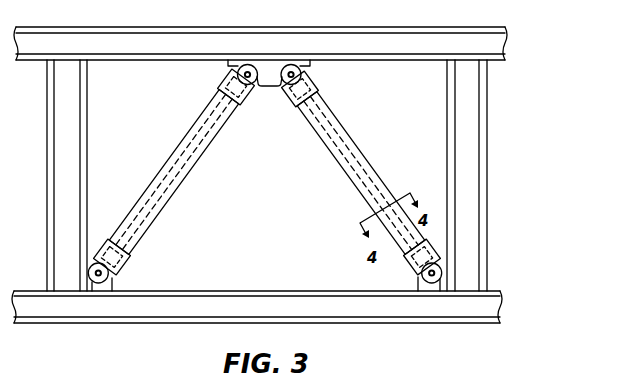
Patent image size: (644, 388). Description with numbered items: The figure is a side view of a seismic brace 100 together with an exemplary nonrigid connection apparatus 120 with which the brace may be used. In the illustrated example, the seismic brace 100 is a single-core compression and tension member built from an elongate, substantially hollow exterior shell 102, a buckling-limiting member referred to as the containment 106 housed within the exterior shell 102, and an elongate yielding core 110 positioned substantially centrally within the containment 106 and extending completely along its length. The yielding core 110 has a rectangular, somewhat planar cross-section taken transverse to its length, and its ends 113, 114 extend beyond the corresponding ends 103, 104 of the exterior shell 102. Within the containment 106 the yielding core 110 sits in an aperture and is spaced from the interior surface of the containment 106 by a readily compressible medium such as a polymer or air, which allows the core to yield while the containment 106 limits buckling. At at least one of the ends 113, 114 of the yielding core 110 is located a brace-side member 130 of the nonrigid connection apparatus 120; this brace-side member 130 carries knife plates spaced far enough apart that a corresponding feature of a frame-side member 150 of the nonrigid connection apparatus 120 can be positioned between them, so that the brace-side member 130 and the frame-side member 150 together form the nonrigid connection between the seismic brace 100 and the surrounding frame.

The seismic brace 100 is at (347, 174).
The exterior shell 102 is at (322, 104).
The end of exterior shell 103 is at (128, 246).
The end of exterior shell 104 is at (228, 97).
The containment 106 is at (318, 133).
The yielding core 110 is at (344, 172).
The end of yielding core 113 is at (122, 269).
The end of yielding core 114 is at (231, 71).
The nonrigid connection apparatus 120 is at (519, 175).
The brace-side member 130 is at (449, 256).
The frame-side member 150 is at (458, 279).